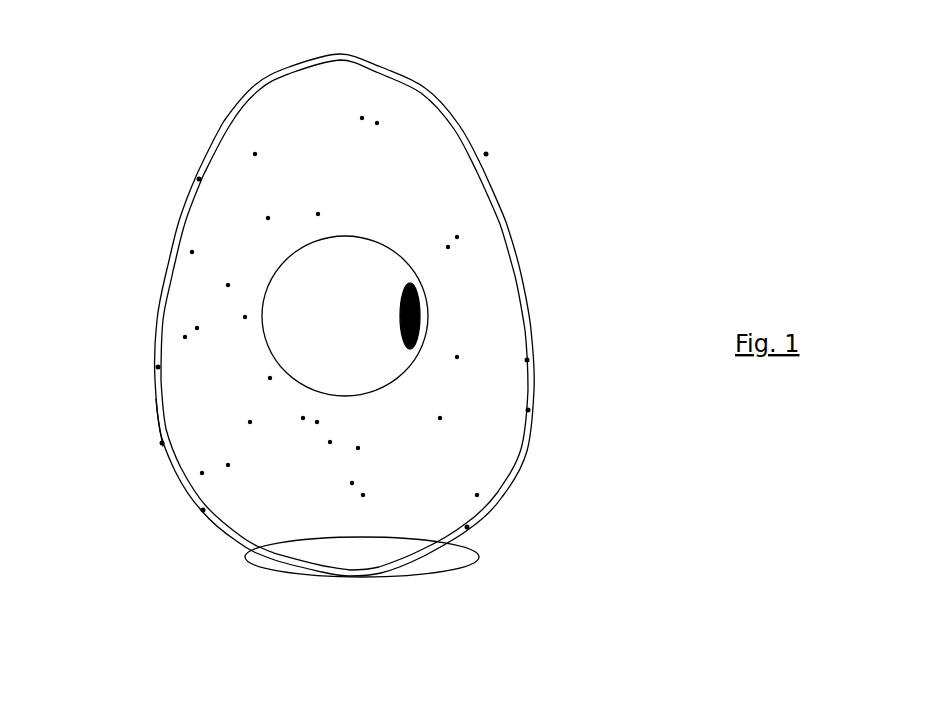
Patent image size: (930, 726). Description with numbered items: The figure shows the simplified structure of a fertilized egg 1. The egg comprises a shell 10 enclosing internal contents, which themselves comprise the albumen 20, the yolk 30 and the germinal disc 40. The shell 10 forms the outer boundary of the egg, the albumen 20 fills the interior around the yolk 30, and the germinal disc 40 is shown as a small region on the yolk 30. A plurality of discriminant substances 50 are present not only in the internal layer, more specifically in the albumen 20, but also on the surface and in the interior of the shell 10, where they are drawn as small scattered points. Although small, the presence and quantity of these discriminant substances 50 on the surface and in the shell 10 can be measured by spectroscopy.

The cell 1 is at (108, 140).
The shell 10 is at (390, 75).
The albumen 20 is at (180, 412).
The yolk 30 is at (290, 283).
The germinal disc 40 is at (413, 325).
The discriminant substances 50 is at (277, 90).